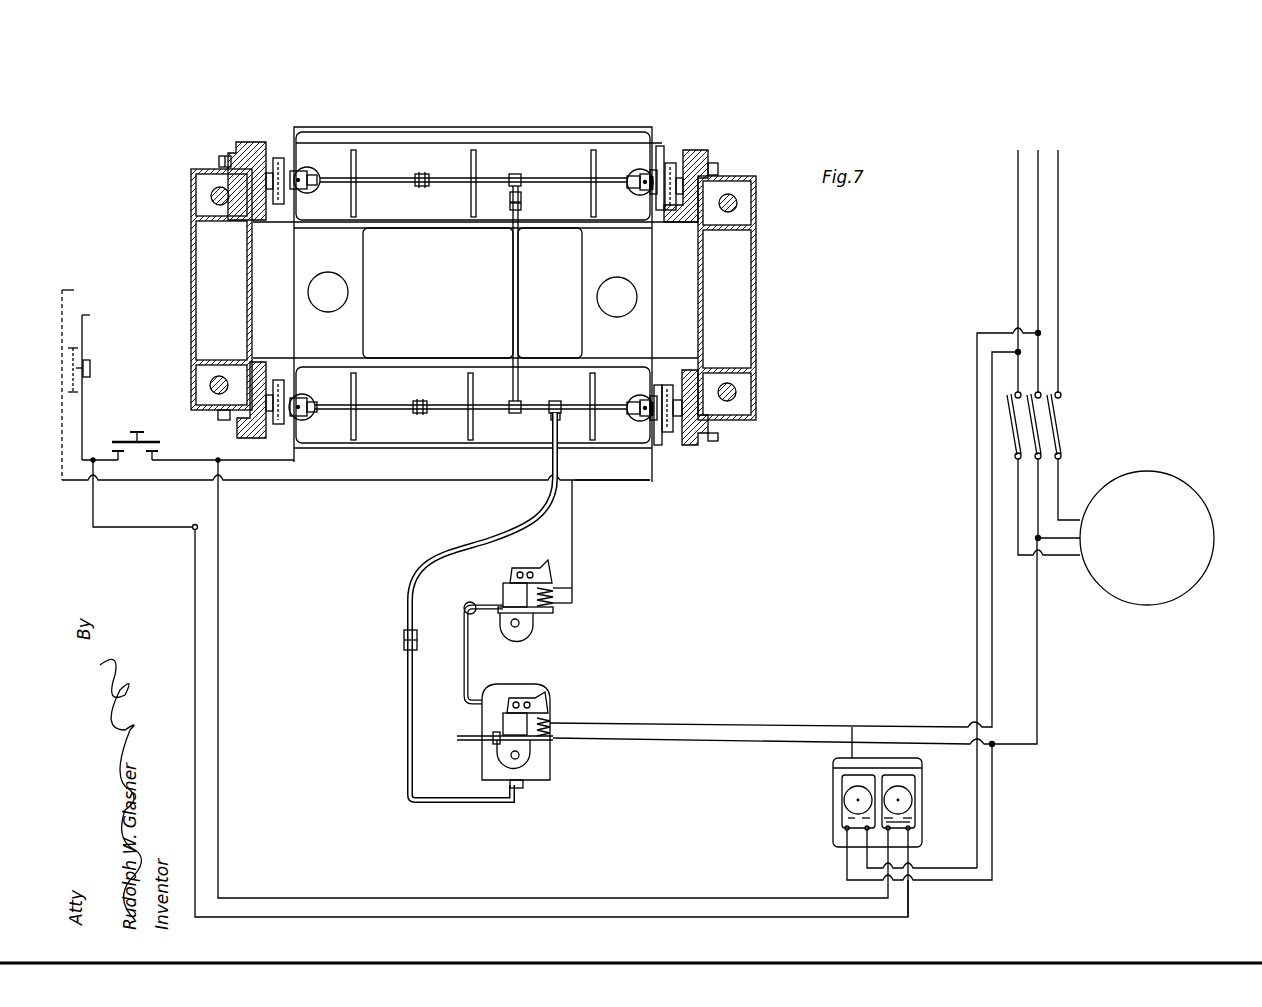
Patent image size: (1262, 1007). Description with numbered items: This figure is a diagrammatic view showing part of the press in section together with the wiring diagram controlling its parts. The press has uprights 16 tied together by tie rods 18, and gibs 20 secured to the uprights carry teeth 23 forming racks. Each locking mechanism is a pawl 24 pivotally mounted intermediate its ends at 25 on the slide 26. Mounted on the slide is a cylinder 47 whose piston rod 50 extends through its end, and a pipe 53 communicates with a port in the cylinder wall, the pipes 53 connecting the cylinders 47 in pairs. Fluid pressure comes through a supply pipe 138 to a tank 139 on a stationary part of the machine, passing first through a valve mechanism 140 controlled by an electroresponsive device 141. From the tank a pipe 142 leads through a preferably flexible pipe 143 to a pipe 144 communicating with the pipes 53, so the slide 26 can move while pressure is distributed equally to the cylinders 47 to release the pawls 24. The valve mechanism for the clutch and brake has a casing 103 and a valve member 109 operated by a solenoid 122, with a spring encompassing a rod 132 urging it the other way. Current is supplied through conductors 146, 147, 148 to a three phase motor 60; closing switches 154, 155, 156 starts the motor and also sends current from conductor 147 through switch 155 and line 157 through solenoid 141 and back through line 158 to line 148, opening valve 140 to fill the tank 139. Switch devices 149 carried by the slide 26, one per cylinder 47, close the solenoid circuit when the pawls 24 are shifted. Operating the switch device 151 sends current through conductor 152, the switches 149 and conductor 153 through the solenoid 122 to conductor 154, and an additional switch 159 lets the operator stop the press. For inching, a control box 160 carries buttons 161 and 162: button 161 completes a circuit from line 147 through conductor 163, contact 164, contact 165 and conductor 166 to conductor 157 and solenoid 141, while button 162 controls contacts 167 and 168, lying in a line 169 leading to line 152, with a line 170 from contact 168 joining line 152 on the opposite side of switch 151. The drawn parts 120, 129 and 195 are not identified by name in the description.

The uprights 16 is at (191, 260).
The tie rods 18 is at (211, 198).
The gibs 20 is at (247, 148).
The teeth 23 is at (680, 176).
The pawl 24 is at (636, 192).
The pivot 25 is at (277, 207).
The slide 26 is at (427, 222).
The cylinder 47 is at (313, 192).
The piston rod 50 is at (640, 172).
The pipe 53 is at (555, 183).
The motor 60 is at (1198, 516).
The casing 103 is at (466, 607).
The valve member 109 is at (503, 593).
The valve bowl 120 is at (520, 630).
The solenoid 122 is at (560, 598).
The valve lever 129 is at (515, 572).
The rod 132 is at (465, 660).
The supply pipe 138 is at (465, 745).
The tank 139 is at (547, 778).
The valve mechanism 140 is at (503, 716).
The electroresponsive device 141 is at (550, 724).
The pipe 142 is at (405, 762).
The pipe 143 is at (500, 535).
The pipe 144 is at (562, 398).
The conductor 146 is at (1060, 208).
The conductor 147 is at (1040, 193).
The conductor 148 is at (1020, 178).
The switch devices 149 is at (306, 178).
The switch device 151 is at (168, 428).
The conductor 152 is at (84, 317).
The conductor 153 is at (582, 530).
The switch 154 is at (66, 290).
The switch 155 is at (1040, 434).
The switch 156 is at (1008, 416).
The line 157 is at (658, 740).
The line 158 is at (718, 724).
The additional switch 159 is at (92, 366).
The control box 160 is at (850, 745).
The button 161 is at (845, 792).
The button 162 is at (905, 796).
The conductor 163 is at (977, 372).
The contact 164 is at (866, 832).
The contact 165 is at (845, 826).
The conductor 166 is at (880, 905).
The contact 167 is at (905, 840).
The contact 168 is at (912, 820).
The line 169 is at (167, 530).
The line 170 is at (220, 760).
The pipe 195 is at (513, 331).